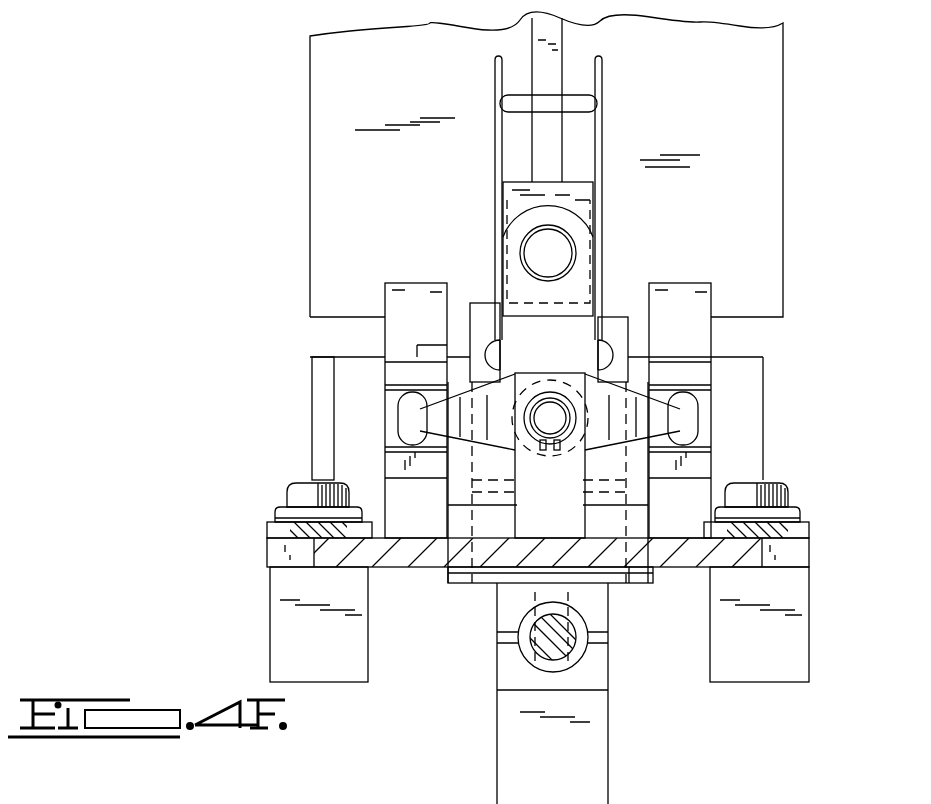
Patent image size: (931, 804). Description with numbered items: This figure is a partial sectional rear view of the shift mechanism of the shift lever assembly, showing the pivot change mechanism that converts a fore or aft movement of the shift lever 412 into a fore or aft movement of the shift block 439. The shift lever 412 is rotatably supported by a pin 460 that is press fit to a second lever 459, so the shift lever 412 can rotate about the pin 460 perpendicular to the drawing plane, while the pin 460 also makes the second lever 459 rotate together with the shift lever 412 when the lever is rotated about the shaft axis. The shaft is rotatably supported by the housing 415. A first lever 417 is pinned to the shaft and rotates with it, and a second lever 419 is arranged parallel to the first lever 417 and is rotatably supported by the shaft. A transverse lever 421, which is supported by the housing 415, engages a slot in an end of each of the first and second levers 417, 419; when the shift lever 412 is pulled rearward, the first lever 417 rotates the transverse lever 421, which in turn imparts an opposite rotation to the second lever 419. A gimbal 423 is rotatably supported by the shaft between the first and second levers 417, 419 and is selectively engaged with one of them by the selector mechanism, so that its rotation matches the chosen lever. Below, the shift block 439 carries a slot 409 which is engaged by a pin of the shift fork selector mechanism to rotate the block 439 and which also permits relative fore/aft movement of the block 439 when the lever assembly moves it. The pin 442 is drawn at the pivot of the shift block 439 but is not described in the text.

The shift lever 412 is at (557, 32).
The second lever 459 is at (572, 222).
The pin 460 is at (562, 256).
The first lever 417 is at (412, 298).
The second lever 419 is at (680, 297).
The housing 415 is at (752, 370).
The transverse lever 421 is at (683, 418).
The gimbal 423 is at (462, 583).
The pivot pin 442 is at (577, 632).
The slot 409 is at (598, 636).
The shift block 439 is at (595, 677).